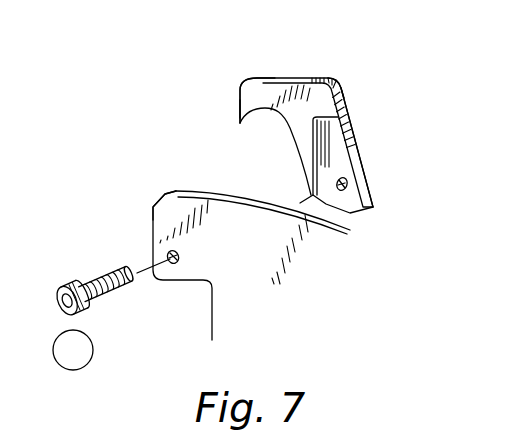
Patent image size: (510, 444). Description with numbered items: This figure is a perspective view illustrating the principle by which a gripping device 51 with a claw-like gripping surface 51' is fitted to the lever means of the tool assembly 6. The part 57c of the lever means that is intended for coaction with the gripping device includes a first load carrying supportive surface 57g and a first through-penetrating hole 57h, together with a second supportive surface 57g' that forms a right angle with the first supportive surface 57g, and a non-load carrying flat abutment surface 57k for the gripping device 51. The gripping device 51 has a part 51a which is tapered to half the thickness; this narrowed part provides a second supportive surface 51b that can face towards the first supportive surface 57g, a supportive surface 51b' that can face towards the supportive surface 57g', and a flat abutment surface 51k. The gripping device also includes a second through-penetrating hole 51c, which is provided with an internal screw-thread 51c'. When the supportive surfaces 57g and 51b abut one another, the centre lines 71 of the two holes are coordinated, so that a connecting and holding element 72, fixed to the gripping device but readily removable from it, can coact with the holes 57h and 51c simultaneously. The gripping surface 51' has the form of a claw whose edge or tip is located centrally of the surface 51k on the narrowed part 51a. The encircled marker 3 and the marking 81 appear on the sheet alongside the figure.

The cutting tool assembly 6 is at (227, 81).
The gripping device 51 is at (306, 103).
The gripping surface 51' is at (200, 133).
The tapered part 51a is at (338, 151).
The second supportive surface 51b is at (406, 147).
The supportive surface 51b' is at (362, 62).
The second through-penetrating hole 51c is at (387, 192).
The screw-thread 51c' is at (358, 239).
The flat abutment surface 51k is at (336, 128).
The part of the lever means 57c is at (262, 296).
The first load carrying supportive surface 57g is at (146, 265).
The second supportive surface 57g' is at (115, 181).
The first through-penetrating hole 57h is at (176, 263).
The non-load carrying flat abutment surface 57k is at (226, 184).
The centre lines 71 is at (371, 174).
The connecting and holding element 72 is at (95, 268).
The item 3 (circled reference) 3 is at (73, 350).
The sheet reference 81 is at (495, 420).